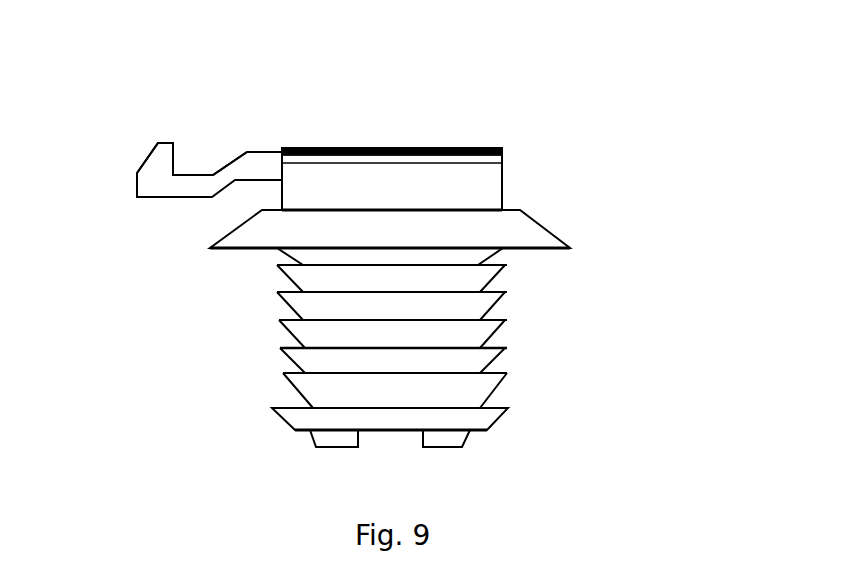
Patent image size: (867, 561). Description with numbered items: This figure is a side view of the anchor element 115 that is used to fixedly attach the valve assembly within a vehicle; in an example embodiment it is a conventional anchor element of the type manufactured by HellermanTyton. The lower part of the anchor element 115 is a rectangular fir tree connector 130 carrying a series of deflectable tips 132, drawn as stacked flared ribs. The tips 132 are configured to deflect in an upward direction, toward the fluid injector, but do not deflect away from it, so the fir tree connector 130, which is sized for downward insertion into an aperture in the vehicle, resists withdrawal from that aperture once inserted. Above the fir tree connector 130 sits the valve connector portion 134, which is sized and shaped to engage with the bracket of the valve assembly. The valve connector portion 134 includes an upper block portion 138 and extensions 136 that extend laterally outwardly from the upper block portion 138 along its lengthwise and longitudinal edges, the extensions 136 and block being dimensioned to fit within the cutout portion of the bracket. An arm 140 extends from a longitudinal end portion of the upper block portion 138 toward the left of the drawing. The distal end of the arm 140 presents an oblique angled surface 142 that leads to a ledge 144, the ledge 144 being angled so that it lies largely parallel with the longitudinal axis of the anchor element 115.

The anchor element 115 is at (786, 101).
The fir tree connector 130 is at (403, 347).
The deflectable tips 132 is at (512, 315).
The valve connector portion 134 is at (471, 86).
The extensions 136 is at (460, 155).
The upper block portion 138 is at (503, 190).
The arm 140 is at (262, 104).
The angled surface 142 is at (143, 156).
The ledge 144 is at (173, 170).